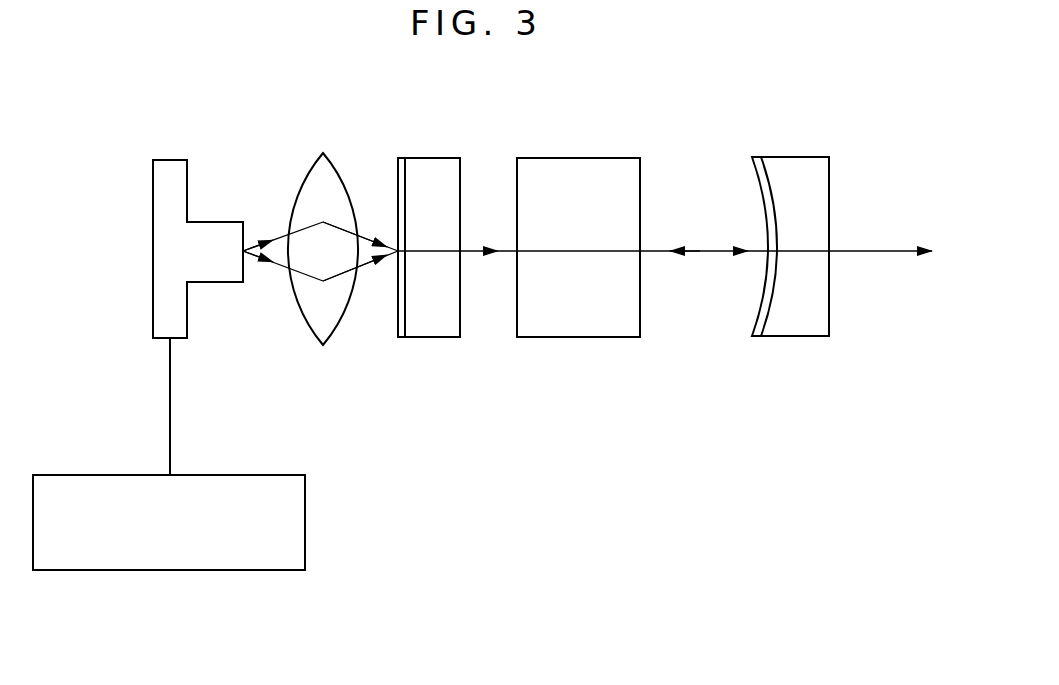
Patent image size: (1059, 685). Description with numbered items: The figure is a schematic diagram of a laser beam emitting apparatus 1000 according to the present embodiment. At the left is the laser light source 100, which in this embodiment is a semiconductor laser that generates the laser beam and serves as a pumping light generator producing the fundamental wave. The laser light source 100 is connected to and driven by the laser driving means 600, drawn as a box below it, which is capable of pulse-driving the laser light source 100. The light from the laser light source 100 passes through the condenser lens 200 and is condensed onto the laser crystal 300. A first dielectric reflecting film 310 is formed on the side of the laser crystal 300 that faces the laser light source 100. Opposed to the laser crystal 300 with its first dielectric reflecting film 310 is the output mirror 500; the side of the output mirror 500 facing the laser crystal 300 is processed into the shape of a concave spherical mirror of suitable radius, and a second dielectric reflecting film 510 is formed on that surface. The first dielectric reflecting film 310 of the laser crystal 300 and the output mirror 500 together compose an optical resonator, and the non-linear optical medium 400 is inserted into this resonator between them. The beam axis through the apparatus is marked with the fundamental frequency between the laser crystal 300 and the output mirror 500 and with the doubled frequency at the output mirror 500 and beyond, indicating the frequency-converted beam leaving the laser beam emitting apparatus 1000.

The laser light source 100 is at (170, 160).
The condenser lens 200 is at (317, 157).
The laser crystal 300 is at (435, 167).
The first dielectric reflecting film 310 is at (391, 286).
The non-linear optical medium 400 is at (578, 168).
The output mirror 500 is at (793, 167).
The second dielectric reflecting film 510 is at (716, 286).
The laser driving means 600 is at (232, 473).
The laser beam emitting apparatus 1000 is at (598, 456).